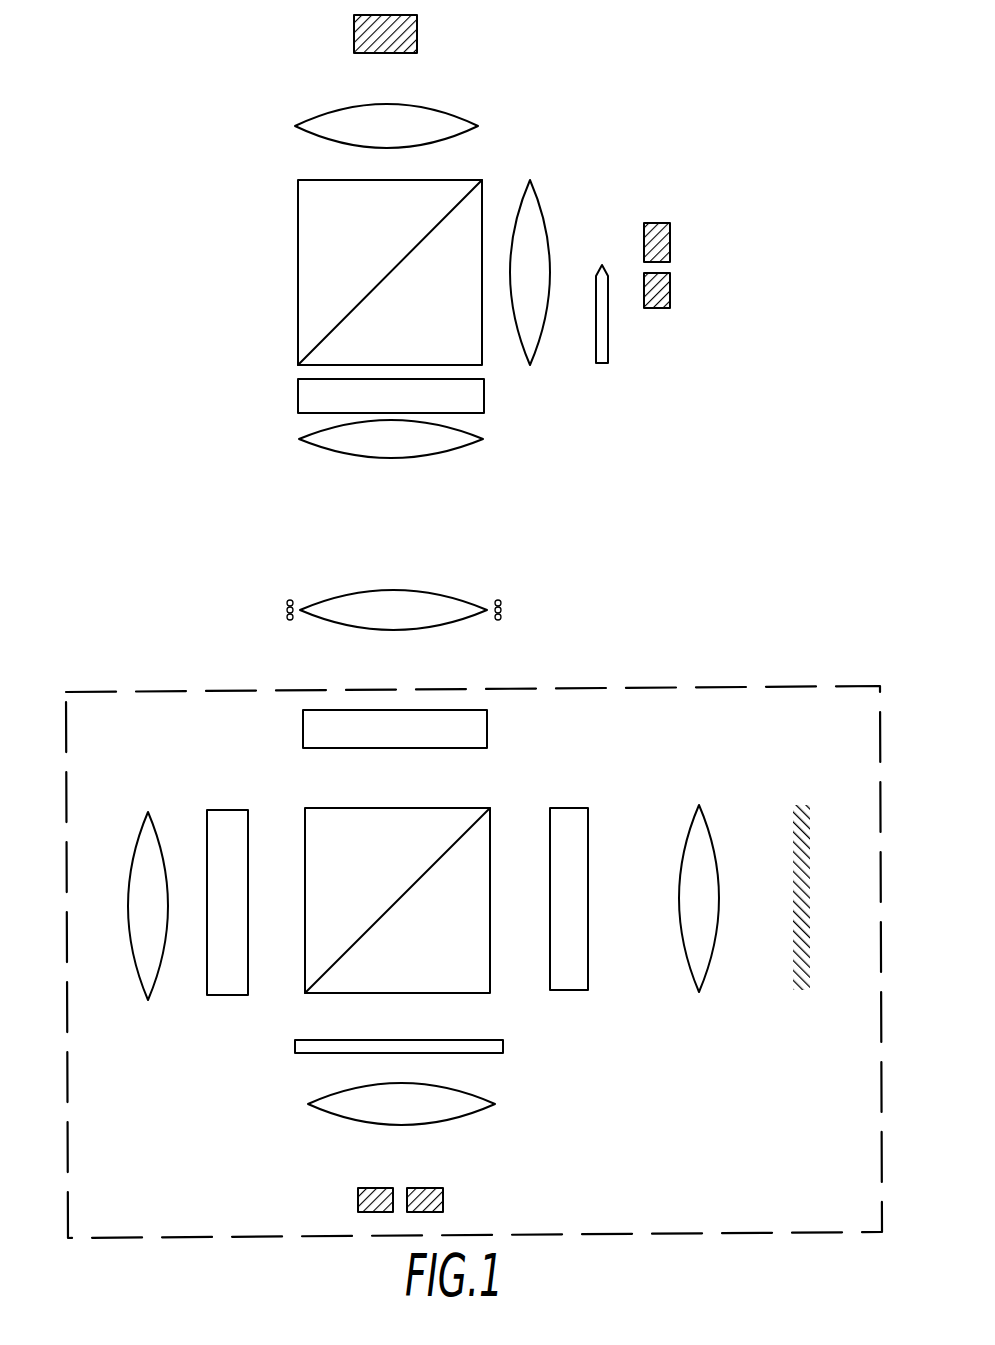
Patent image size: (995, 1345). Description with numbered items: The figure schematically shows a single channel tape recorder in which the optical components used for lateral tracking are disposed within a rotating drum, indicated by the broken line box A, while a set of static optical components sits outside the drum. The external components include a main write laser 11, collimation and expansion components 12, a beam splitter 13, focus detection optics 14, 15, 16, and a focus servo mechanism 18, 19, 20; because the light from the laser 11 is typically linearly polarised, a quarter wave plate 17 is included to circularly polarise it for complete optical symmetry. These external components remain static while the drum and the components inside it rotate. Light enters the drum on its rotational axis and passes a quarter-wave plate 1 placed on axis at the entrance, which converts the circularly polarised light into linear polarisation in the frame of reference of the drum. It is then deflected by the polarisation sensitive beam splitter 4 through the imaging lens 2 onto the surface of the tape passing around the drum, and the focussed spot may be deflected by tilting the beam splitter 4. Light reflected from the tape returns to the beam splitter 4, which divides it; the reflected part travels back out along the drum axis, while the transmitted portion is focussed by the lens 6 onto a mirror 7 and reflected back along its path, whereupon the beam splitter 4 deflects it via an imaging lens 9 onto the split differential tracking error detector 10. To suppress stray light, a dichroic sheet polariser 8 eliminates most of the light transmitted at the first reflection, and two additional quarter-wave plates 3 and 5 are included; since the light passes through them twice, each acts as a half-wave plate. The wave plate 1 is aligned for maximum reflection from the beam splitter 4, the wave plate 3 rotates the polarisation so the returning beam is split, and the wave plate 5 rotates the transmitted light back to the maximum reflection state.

The quarter-wave plate 1 is at (303, 728).
The imaging lens 2 is at (148, 826).
The quarter-wave plate 3 is at (230, 810).
The beam splitter 4 is at (480, 822).
The quarter-wave plate 5 is at (570, 990).
The lens 6 is at (700, 975).
The mirror 7 is at (798, 985).
The dichroic sheet polariser 8 is at (296, 1047).
The imaging lens 9 is at (320, 1102).
The split differential tracking error detector 10 is at (357, 1200).
The main write laser 11 is at (354, 31).
The collimation and expansion components 12 is at (305, 126).
The beam splitter 13 is at (297, 240).
The focus detection optics 14 is at (530, 200).
The focus detection optics 15 is at (600, 256).
The focus detection optics 16 is at (655, 222).
The quarter wave plate 17 is at (303, 398).
The focus servo mechanism 18 is at (347, 439).
The focus servo mechanism 19 is at (312, 610).
The focus servo mechanism 20 is at (506, 610).
The drum A is at (830, 688).